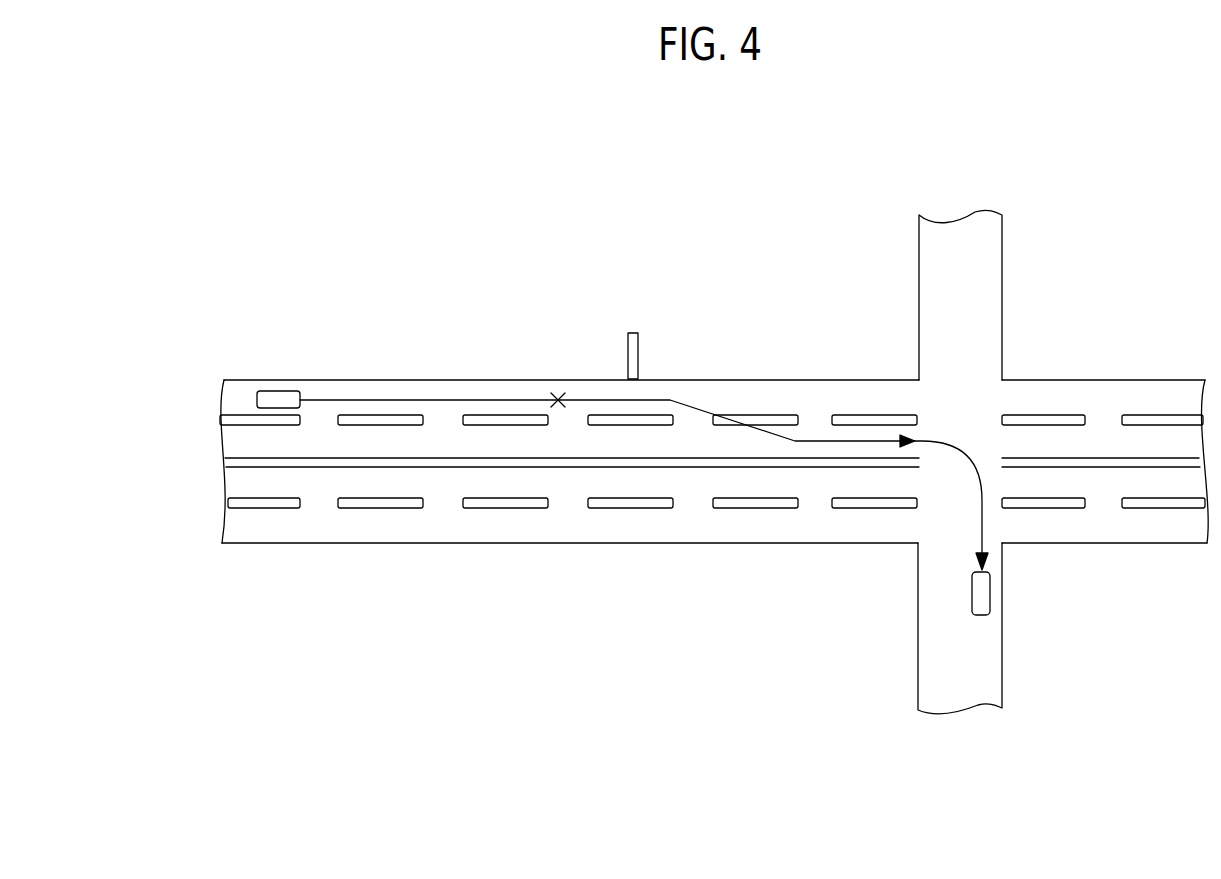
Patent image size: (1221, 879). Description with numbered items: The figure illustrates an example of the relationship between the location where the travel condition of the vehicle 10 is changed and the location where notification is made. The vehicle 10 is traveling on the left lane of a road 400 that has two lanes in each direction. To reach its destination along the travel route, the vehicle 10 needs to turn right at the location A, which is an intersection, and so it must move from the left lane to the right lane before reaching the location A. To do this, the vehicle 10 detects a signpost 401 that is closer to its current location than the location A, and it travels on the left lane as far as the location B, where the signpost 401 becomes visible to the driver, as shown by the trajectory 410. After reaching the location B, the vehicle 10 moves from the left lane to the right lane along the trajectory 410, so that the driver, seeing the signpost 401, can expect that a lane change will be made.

The road 400 is at (207, 380).
The vehicle 10 is at (278, 391).
The signpost 401 is at (632, 333).
The trajectory 410 is at (690, 406).
The location A is at (962, 397).
The location B is at (557, 400).